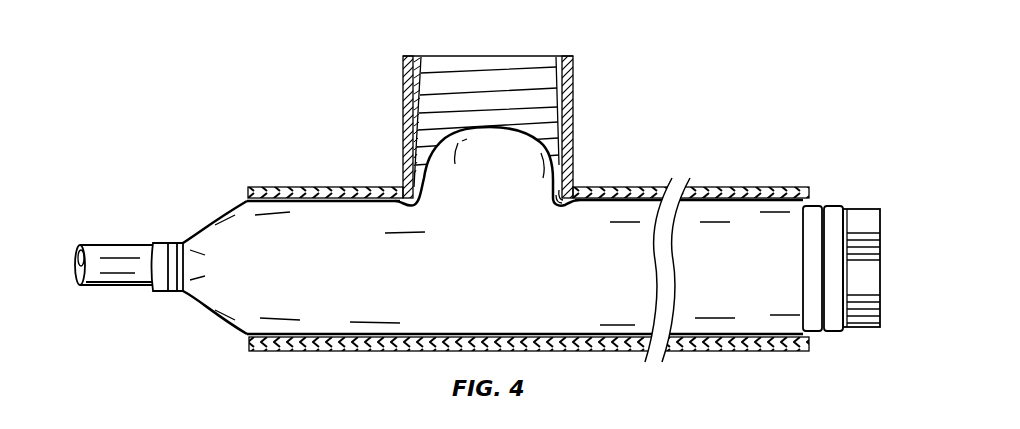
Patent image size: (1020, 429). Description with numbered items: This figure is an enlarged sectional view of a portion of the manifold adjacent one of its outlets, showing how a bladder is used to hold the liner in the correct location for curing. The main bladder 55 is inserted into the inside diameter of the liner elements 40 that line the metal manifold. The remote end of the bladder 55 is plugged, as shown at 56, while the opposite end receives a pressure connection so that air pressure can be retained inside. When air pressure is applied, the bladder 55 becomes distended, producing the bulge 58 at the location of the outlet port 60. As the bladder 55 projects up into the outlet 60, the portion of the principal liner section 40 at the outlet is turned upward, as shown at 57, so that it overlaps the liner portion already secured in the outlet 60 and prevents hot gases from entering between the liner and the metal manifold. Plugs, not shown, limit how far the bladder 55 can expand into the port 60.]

The liner elements 40 is at (737, 197).
The main bladder 55 is at (225, 304).
The plug 56 is at (866, 324).
The turned-up liner portion 57 is at (574, 184).
The bulge 58 is at (548, 147).
The outlet port 60 is at (411, 155).